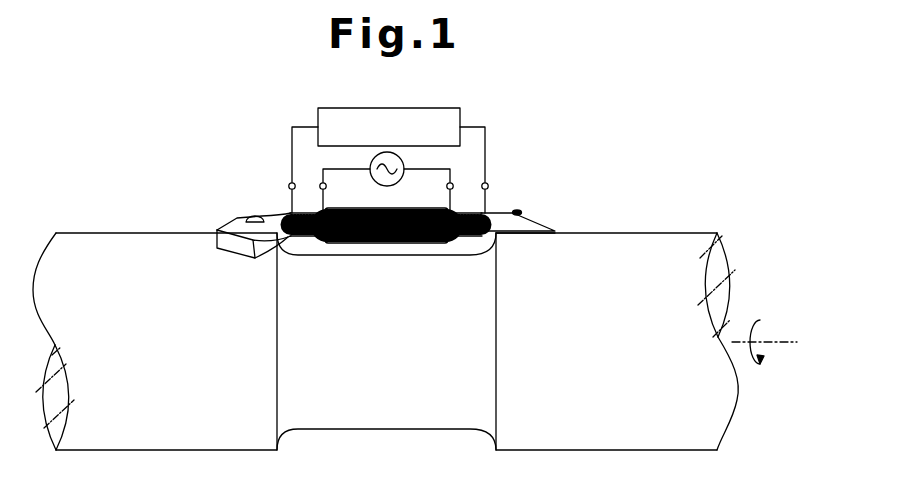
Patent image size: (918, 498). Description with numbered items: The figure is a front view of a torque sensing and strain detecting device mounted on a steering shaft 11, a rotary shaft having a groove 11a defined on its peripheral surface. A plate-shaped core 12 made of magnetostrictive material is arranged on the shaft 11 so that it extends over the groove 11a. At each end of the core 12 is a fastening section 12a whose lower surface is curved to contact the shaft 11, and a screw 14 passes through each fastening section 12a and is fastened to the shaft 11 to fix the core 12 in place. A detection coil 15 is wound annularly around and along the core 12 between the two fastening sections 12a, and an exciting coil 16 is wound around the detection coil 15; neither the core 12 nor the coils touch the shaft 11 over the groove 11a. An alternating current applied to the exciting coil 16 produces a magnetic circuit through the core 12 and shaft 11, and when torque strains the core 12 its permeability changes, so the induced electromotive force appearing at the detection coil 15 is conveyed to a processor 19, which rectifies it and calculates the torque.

The steering shaft 11 is at (726, 412).
The groove 11a is at (410, 430).
The core 12 is at (520, 236).
The fastening section 12a is at (222, 228).
The screw 14 is at (258, 214).
The detection coil 15 is at (452, 244).
The exciting coil 16 is at (399, 210).
The processor 19 is at (462, 117).